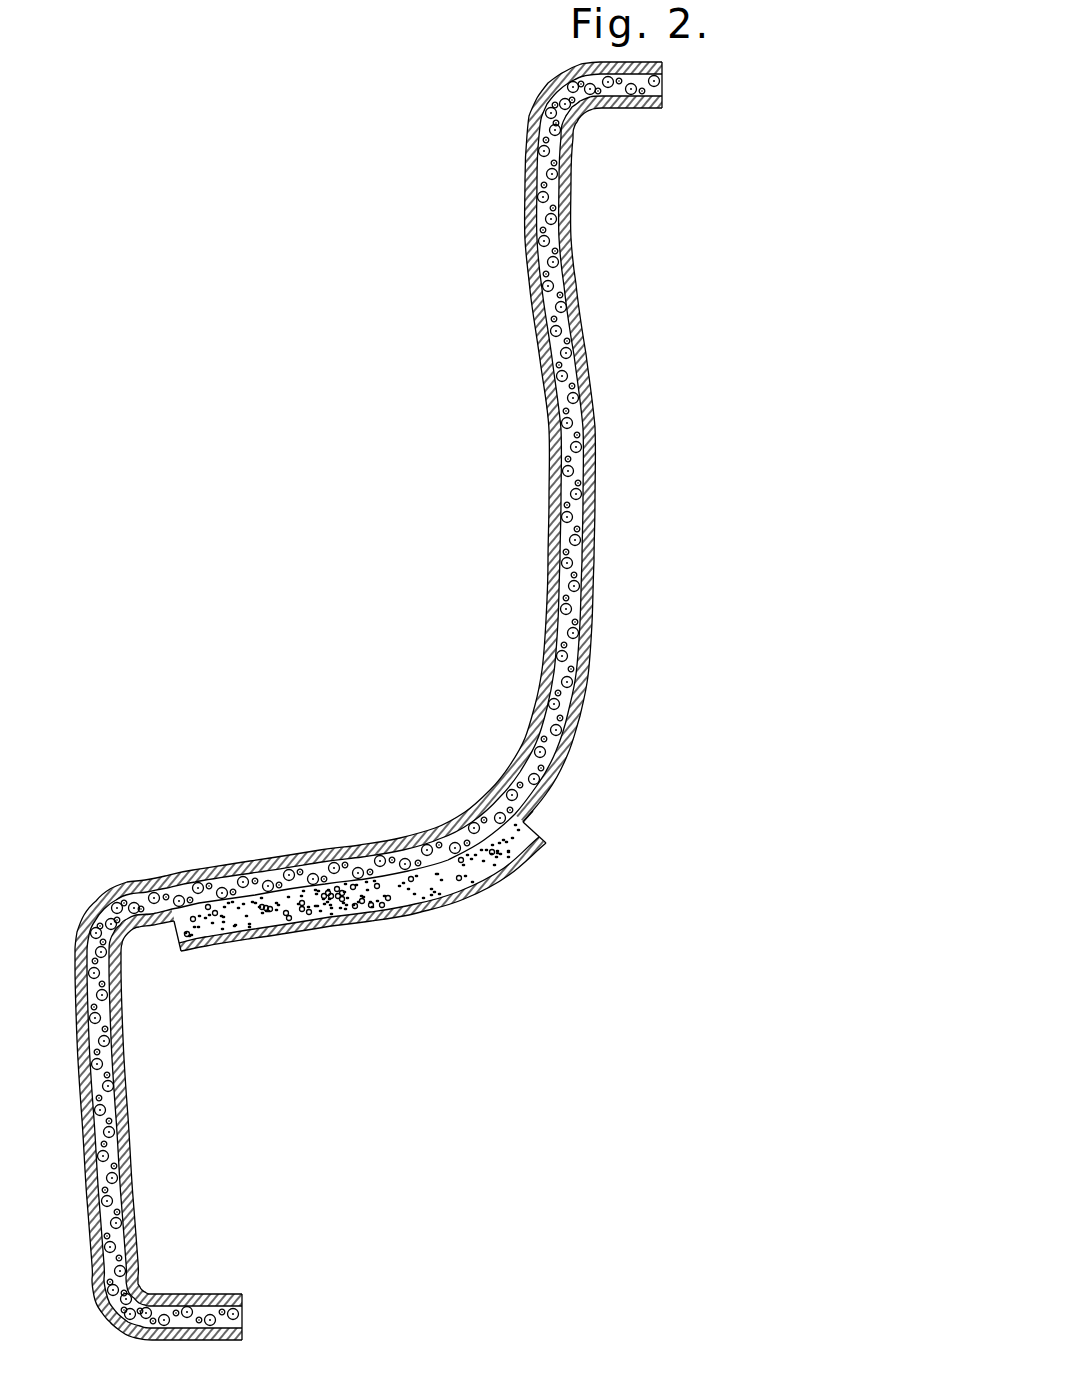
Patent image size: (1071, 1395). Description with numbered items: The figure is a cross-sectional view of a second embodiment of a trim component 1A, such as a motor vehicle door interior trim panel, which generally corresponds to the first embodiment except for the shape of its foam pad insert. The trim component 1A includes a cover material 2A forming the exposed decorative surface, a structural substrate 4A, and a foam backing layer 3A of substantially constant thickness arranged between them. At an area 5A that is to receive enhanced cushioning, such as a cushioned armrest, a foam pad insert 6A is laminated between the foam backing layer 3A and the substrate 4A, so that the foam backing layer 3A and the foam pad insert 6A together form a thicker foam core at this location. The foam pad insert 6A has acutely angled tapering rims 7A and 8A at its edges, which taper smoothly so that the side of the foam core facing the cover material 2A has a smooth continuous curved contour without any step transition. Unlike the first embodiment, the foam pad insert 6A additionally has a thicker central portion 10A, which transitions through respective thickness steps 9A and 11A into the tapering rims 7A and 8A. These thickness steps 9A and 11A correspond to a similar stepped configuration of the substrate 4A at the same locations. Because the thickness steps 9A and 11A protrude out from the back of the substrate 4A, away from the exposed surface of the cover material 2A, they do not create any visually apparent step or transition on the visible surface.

The trim component 1A is at (218, 787).
The cover material 2A is at (530, 152).
The foam backing layer 3A is at (548, 296).
The substrate 4A is at (587, 527).
The area 5A is at (82, 915).
The foam pad insert 6A is at (362, 900).
The tapering rim 7A is at (132, 935).
The tapering rim 8A is at (535, 797).
The thickness step 9A is at (242, 917).
The thicker central portion 10A is at (462, 873).
The thickness step 11A is at (535, 832).